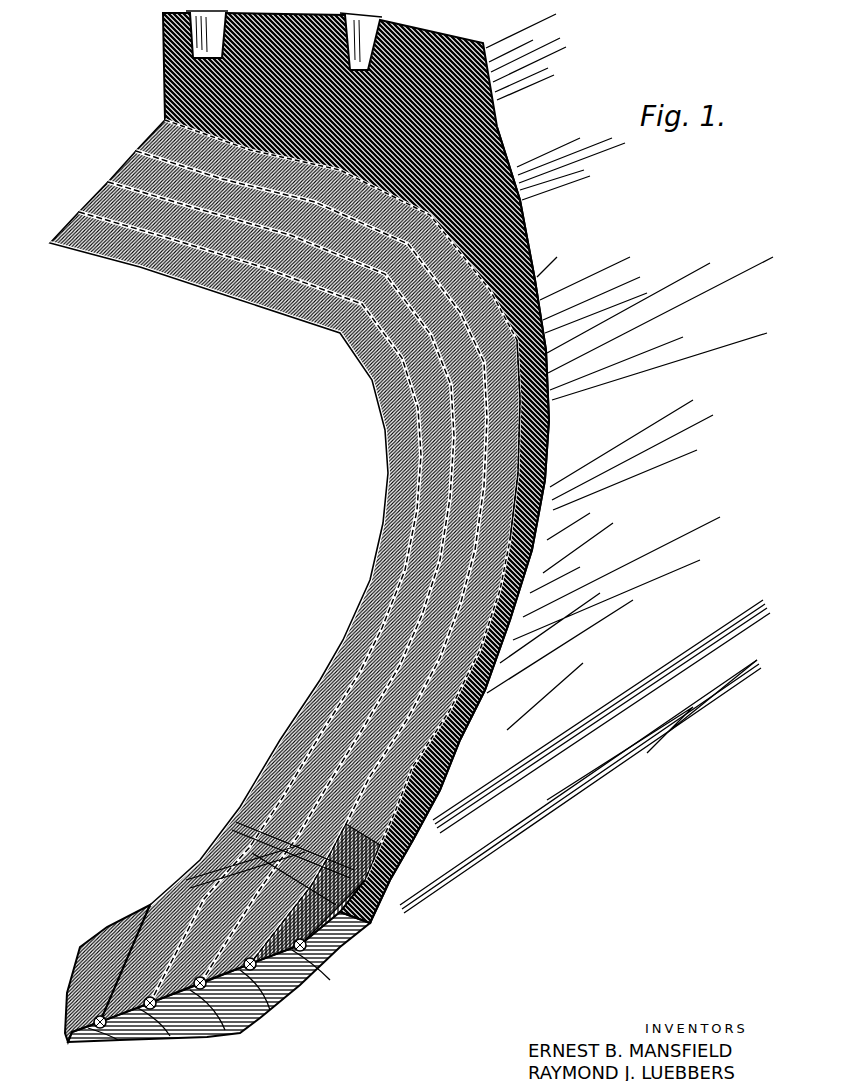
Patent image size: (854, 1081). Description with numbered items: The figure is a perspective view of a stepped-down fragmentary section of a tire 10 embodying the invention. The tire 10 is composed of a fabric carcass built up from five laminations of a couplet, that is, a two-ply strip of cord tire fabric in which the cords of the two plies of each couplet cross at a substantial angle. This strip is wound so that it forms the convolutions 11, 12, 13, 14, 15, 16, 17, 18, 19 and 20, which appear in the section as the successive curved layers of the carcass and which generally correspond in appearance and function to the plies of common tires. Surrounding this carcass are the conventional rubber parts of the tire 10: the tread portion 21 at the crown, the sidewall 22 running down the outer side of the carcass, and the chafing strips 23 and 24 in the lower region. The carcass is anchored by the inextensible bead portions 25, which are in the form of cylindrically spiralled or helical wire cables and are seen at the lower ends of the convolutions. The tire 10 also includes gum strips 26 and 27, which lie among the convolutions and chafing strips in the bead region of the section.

The tire 10 is at (572, 207).
The convolution 11 is at (378, 388).
The convolution 12 is at (380, 400).
The convolution 13 is at (414, 452).
The convolution 14 is at (418, 488).
The convolution 15 is at (438, 400).
The convolution 16 is at (453, 409).
The convolution 17 is at (486, 470).
The convolution 18 is at (488, 492).
The convolution 19 is at (527, 396).
The convolution 20 is at (537, 432).
The tread portion 21 is at (498, 122).
The sidewall 22 is at (528, 548).
The chafing strip 23 is at (455, 762).
The chafing strip 24 is at (370, 923).
The inextensible bead portion 25 is at (100, 1030).
The gum strip 26 is at (240, 830).
The gum strip 27 is at (378, 876).